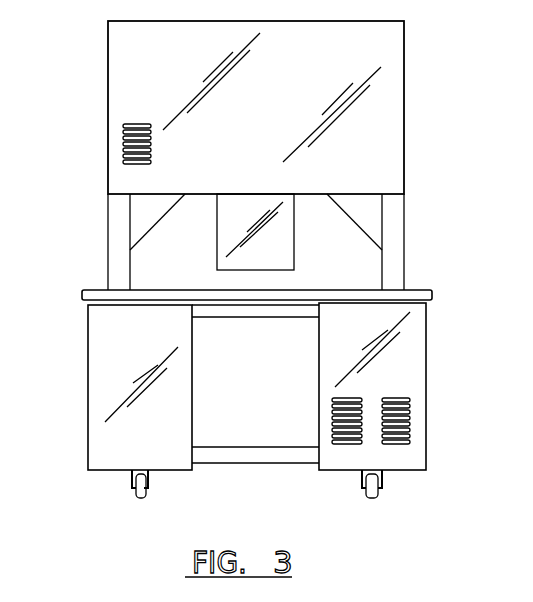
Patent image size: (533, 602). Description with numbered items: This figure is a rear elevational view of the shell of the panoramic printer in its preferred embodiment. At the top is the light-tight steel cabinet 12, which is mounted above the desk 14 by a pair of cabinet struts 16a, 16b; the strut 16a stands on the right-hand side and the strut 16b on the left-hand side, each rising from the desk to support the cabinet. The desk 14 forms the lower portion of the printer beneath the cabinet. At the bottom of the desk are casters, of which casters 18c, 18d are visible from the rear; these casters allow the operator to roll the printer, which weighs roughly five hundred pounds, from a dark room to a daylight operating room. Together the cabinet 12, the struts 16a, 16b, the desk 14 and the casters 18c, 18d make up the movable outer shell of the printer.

The cabinet 12 is at (395, 77).
The desk 14 is at (415, 362).
The cabinet strut 16a is at (398, 245).
The cabinet strut 16b is at (115, 265).
The caster 18c is at (138, 500).
The caster 18d is at (370, 500).